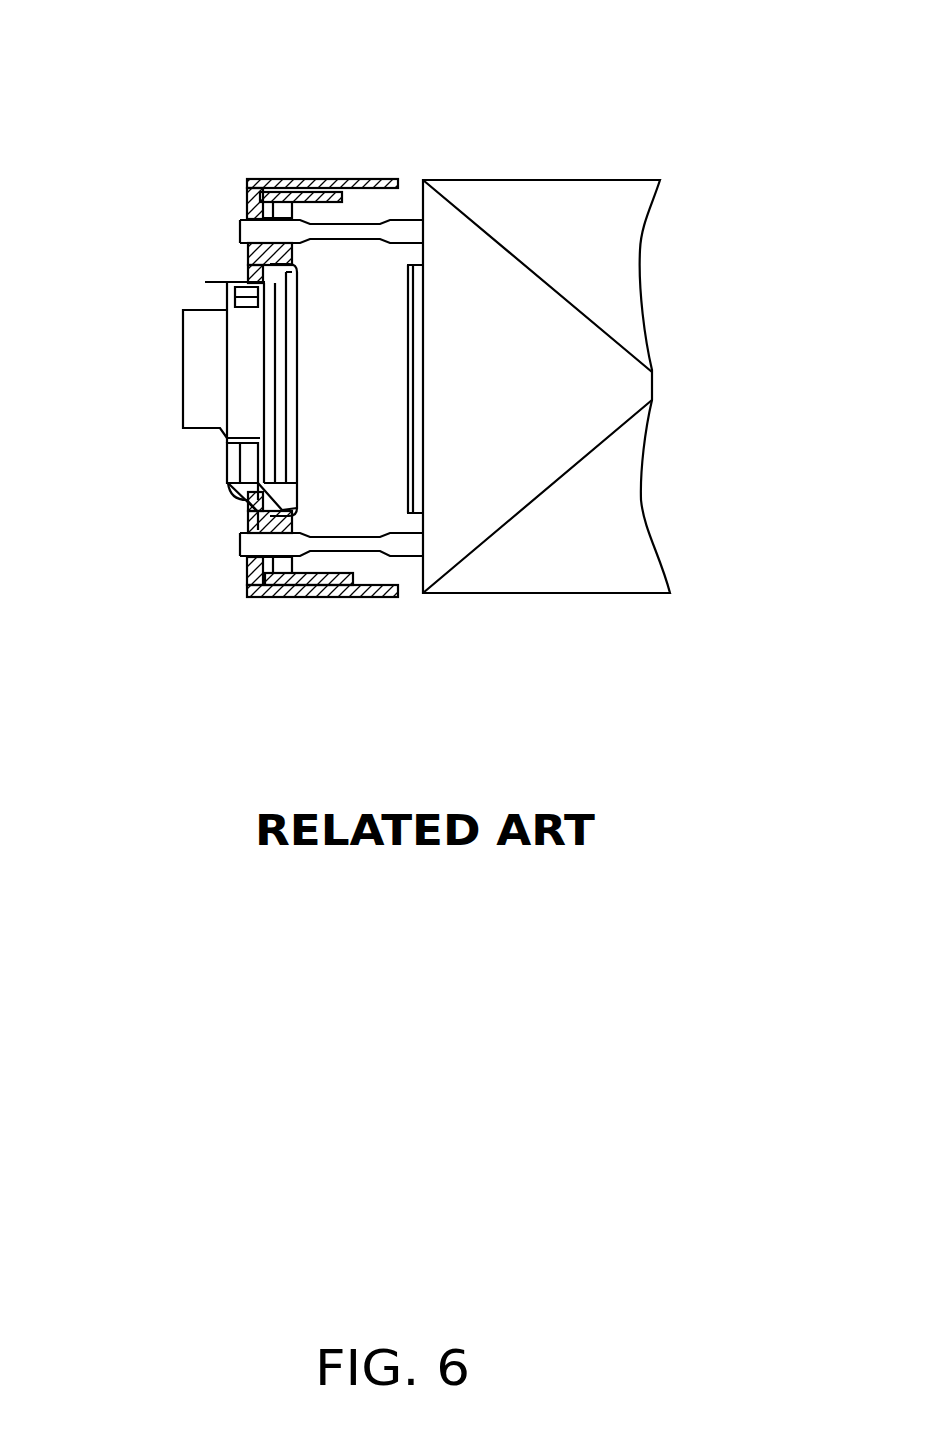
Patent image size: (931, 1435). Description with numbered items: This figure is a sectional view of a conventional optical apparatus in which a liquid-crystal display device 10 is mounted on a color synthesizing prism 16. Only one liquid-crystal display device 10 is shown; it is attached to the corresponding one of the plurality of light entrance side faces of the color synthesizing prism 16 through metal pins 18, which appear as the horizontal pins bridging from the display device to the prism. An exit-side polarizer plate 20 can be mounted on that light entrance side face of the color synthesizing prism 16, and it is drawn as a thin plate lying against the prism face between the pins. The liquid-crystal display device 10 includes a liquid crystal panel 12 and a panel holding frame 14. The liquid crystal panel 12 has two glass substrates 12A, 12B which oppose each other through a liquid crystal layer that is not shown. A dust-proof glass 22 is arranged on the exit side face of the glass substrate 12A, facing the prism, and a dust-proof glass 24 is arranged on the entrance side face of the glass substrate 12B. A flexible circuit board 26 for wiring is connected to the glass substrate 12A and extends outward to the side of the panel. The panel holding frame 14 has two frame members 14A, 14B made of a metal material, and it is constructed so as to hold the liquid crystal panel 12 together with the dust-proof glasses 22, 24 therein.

The liquid-crystal display device 10 is at (388, 120).
The liquid crystal panel 12 is at (66, 273).
The glass substrate 12A is at (222, 284).
The glass substrate 12B is at (234, 310).
The panel holding frame 14 is at (92, 490).
The frame member 14A is at (247, 500).
The frame member 14B is at (226, 478).
The color synthesizing prism 16 is at (590, 572).
The metal pins 18 is at (335, 226).
The exit-side polarizer plate 20 is at (417, 505).
The dust-proof glass 22 is at (283, 366).
The dust-proof glass 24 is at (240, 458).
The flexible circuit board 26 is at (190, 357).